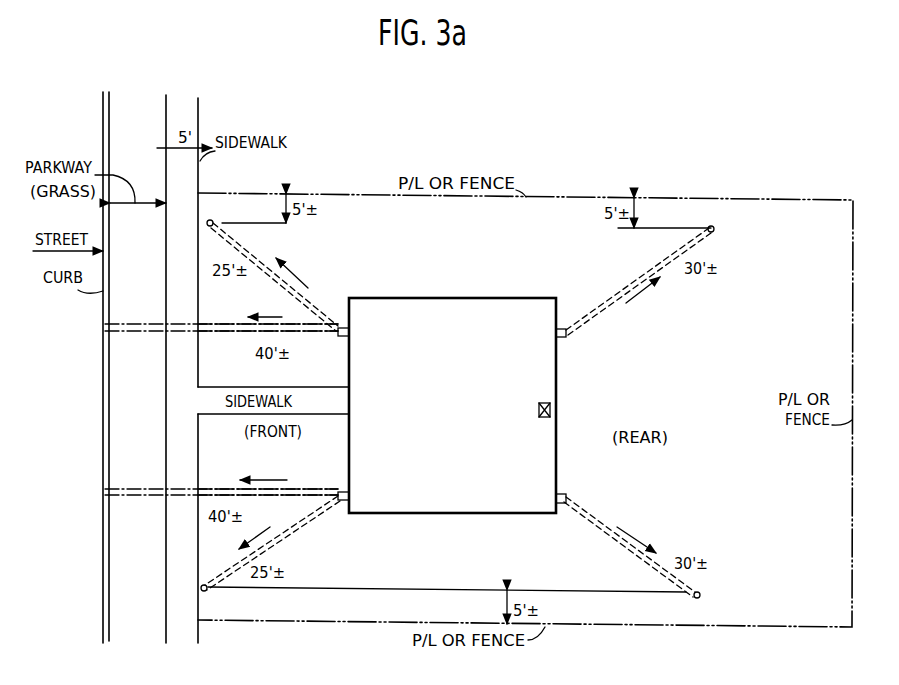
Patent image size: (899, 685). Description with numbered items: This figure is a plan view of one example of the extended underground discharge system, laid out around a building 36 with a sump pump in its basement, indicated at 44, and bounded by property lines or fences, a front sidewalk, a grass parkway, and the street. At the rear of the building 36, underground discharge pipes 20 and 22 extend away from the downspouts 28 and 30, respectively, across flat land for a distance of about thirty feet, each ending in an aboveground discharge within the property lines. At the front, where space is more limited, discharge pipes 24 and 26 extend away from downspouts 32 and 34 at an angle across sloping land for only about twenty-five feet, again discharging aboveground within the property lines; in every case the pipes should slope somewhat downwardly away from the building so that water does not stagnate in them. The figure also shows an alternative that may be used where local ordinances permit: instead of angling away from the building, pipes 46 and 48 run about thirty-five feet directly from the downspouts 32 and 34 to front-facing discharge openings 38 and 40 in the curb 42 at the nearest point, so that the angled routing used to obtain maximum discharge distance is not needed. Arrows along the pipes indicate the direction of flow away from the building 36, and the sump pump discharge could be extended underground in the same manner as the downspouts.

The underground discharge pipe 20 is at (592, 308).
The underground discharge pipe 22 is at (612, 541).
The discharge pipe 24 is at (303, 305).
The discharge pipe 26 is at (313, 522).
The downspout 28 is at (567, 337).
The downspout 30 is at (566, 494).
The downspout 32 is at (342, 337).
The downspout 34 is at (343, 489).
The building 36 is at (403, 518).
The front-facing discharge opening 38 is at (103, 327).
The front-facing discharge opening 40 is at (103, 493).
The curb 42 is at (103, 397).
The sump pump 44 is at (545, 402).
The pipe 46 is at (242, 334).
The pipe 48 is at (223, 487).